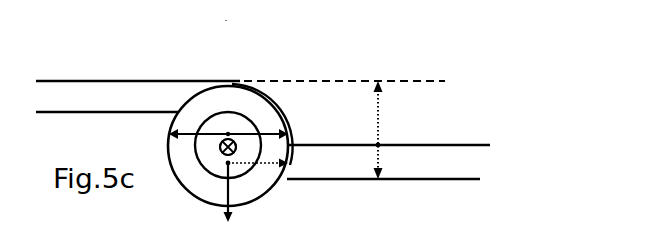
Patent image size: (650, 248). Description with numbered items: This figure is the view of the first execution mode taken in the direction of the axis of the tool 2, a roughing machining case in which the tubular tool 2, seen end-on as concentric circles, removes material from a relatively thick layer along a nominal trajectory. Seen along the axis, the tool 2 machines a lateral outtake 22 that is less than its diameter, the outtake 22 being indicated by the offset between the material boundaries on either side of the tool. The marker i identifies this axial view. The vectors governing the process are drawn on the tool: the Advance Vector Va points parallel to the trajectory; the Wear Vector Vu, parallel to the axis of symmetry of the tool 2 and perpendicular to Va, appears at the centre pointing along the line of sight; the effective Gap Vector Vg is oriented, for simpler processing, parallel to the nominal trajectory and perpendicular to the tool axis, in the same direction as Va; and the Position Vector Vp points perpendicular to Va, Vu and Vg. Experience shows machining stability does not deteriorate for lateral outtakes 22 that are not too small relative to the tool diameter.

The tool 2 is at (249, 97).
The lateral outtake 22 is at (375, 127).
The index marker i is at (226, 13).
The Gap Vector Vg is at (220, 131).
The Advance Vector Va is at (257, 158).
The Wear Vector Vu is at (220, 149).
The Position Vector Vp is at (237, 196).